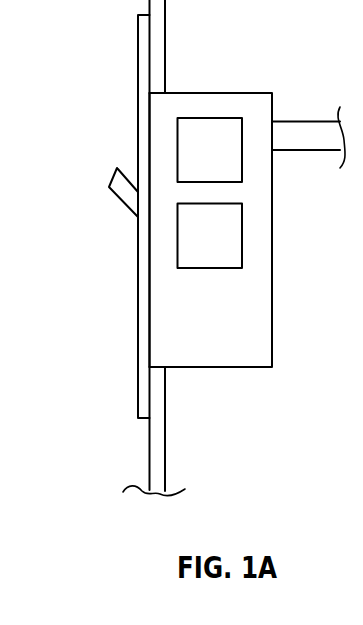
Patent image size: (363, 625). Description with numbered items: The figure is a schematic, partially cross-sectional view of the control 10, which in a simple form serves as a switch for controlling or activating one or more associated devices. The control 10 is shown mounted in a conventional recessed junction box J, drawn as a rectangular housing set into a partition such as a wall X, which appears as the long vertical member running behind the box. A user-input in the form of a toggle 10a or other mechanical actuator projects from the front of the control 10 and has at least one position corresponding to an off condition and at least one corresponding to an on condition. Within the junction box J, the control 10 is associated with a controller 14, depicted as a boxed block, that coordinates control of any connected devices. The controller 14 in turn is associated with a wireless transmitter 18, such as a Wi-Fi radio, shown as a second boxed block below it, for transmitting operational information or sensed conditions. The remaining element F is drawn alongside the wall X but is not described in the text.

The control 10 is at (302, 122).
The toggle 10a is at (148, 288).
The controller 14 is at (225, 163).
The wireless transmitter 18 is at (225, 248).
The junction box J is at (272, 288).
The wall X is at (167, 0).
The flange bar F is at (139, 402).